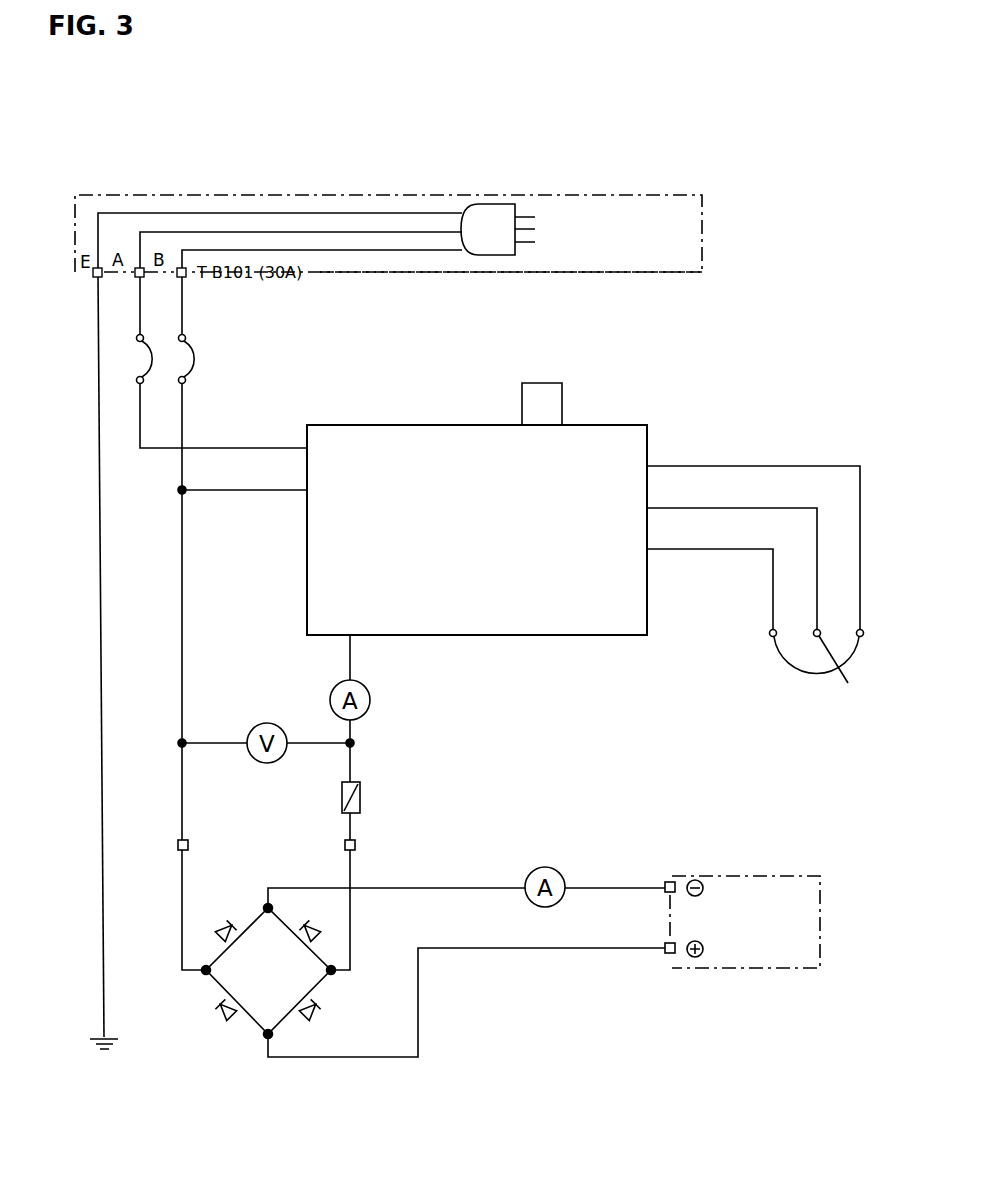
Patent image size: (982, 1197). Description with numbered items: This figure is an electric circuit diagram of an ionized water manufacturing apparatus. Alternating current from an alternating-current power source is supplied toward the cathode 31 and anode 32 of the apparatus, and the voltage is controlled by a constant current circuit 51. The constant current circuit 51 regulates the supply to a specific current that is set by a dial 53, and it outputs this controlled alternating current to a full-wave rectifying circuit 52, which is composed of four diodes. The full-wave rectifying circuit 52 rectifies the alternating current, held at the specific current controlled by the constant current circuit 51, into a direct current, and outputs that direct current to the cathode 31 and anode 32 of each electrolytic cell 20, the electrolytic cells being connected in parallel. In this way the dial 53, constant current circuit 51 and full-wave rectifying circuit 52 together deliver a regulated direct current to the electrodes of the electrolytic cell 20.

The electrolytic cell 20 is at (735, 874).
The cathode 31 is at (674, 882).
The anode 32 is at (668, 953).
The constant current circuit 51 is at (600, 428).
The full-wave rectifying circuit 52 is at (205, 993).
The dial 53 is at (856, 657).